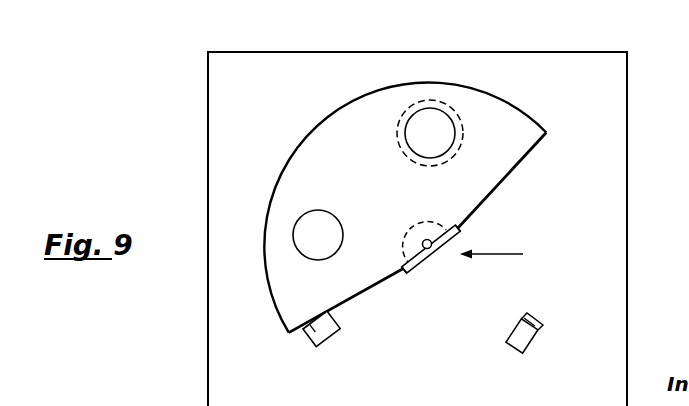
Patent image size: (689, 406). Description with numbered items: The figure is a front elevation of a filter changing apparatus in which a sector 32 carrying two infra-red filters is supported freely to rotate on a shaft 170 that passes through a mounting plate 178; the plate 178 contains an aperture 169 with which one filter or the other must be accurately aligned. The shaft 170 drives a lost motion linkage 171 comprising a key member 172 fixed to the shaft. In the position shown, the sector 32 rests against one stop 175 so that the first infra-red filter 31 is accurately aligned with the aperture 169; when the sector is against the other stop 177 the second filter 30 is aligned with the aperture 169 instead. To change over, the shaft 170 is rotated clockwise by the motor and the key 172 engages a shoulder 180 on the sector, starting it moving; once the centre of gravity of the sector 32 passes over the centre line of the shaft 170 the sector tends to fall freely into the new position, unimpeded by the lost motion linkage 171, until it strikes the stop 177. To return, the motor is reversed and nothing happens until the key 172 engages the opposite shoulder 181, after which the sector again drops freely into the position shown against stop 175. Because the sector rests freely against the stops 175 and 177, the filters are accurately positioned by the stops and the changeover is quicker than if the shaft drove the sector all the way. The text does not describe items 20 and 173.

The frame 20 is at (331, 4).
The second filter 30 is at (296, 222).
The infra-red filter 31 is at (429, 108).
The sector 32 is at (493, 187).
The aperture 169 is at (447, 104).
The shaft 170 is at (430, 250).
The lost motion linkage 171 is at (511, 255).
The key member 172 is at (450, 226).
The pivot arc 173 is at (411, 229).
The stop 175 is at (340, 329).
The stop 177 is at (508, 345).
The mounting plate 178 is at (208, 103).
The shoulder 180 is at (458, 231).
The shoulder 181 is at (413, 271).